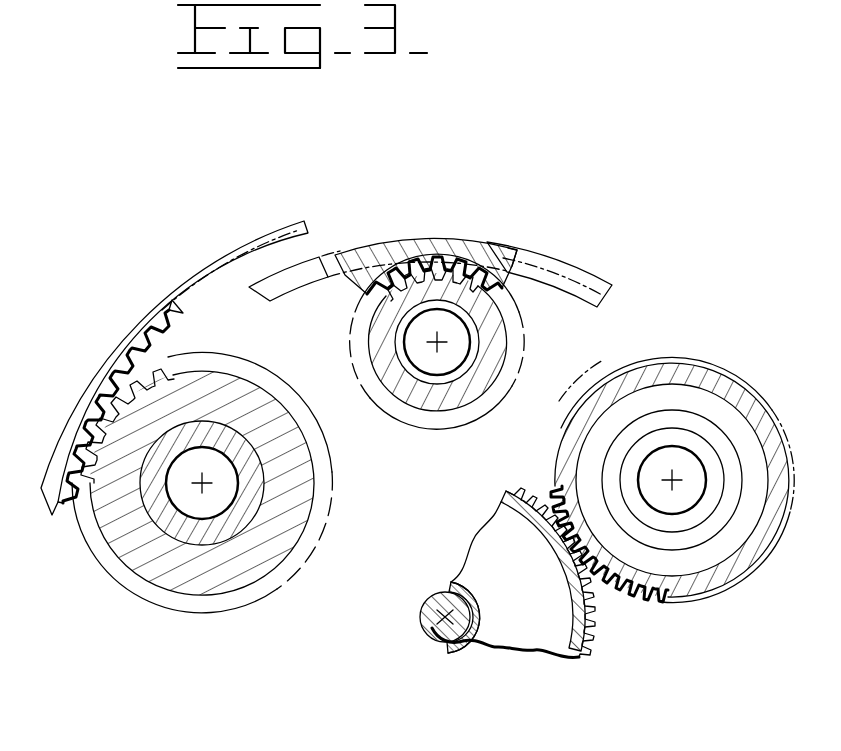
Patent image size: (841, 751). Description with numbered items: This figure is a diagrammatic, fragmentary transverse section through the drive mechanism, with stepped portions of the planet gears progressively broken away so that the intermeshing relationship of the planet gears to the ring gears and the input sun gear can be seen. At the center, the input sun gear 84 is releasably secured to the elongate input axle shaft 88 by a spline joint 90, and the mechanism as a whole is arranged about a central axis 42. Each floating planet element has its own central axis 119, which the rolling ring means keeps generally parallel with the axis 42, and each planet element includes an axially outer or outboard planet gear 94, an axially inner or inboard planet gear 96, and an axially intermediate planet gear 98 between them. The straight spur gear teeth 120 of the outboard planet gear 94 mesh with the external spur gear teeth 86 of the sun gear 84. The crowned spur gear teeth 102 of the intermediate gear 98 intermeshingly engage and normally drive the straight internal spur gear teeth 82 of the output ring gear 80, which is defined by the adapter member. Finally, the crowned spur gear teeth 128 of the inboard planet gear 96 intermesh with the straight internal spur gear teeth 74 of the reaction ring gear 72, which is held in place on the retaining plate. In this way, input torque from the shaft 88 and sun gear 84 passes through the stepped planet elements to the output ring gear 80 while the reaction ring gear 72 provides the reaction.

The central axis 42 is at (432, 614).
The reaction ring gear 72 is at (301, 227).
The internal spur gear teeth 74 is at (168, 345).
The output ring gear 80 is at (622, 297).
The internal spur gear teeth 82 is at (455, 262).
The input sun gear 84 is at (571, 668).
The external spur gear teeth 86 is at (598, 636).
The input axle shaft 88 is at (441, 638).
The spline joint 90 is at (465, 650).
The outboard planet gear 94 is at (544, 460).
The inboard planet gear 96 is at (343, 483).
The intermediate planet gear 98 is at (531, 347).
The crowned spur gear teeth 102 is at (510, 258).
The central axis 119 is at (437, 342).
The straight spur gear teeth 120 is at (627, 592).
The crowned spur gear teeth 128 is at (215, 362).